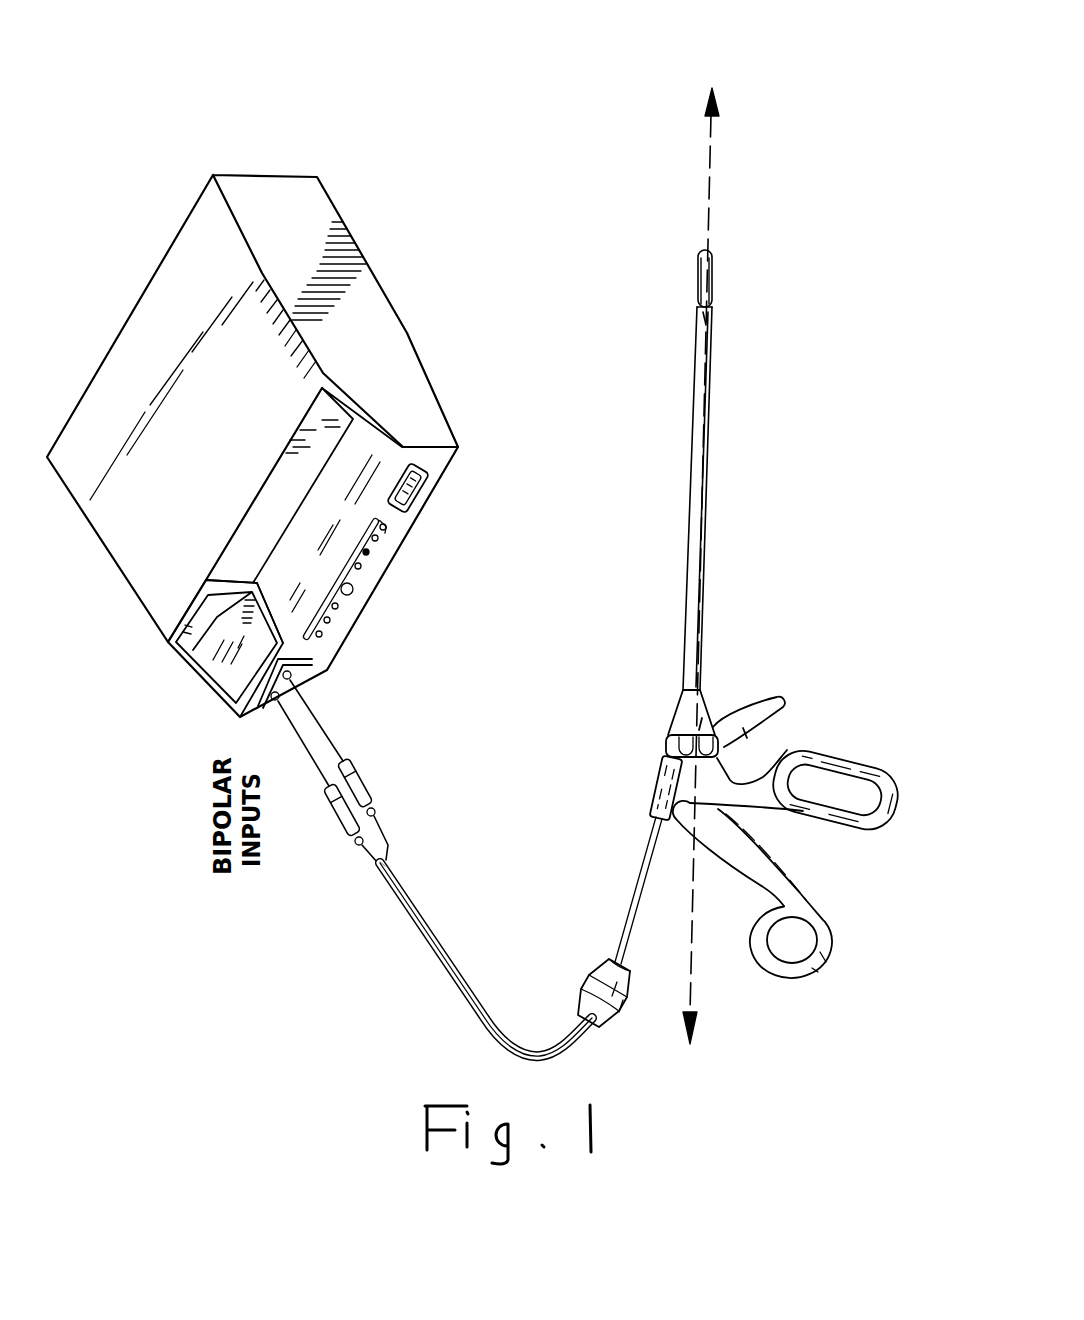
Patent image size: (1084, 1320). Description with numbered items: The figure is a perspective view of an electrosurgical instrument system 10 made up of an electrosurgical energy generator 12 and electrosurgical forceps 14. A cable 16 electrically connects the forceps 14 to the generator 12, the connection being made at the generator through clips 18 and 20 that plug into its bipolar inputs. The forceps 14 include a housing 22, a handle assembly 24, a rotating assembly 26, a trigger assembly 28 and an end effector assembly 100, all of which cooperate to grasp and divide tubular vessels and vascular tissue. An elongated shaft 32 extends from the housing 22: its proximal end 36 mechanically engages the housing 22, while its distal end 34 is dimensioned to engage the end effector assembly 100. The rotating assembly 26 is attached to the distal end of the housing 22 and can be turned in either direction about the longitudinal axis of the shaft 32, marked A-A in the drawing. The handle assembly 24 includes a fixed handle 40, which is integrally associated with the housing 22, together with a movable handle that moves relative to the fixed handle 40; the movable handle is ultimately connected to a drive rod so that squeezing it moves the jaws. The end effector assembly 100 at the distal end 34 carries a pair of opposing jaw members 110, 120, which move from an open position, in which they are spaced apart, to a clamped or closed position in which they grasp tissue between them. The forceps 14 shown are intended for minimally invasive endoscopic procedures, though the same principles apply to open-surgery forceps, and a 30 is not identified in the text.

The electrosurgical instrument system 10 is at (285, 858).
The electrosurgical energy generator 12 is at (205, 412).
The electrosurgical forceps 14 is at (760, 568).
The cable 16 is at (453, 957).
The clip 18 is at (260, 712).
The clip 20 is at (300, 674).
The housing 22 is at (650, 768).
The handle assembly 24 is at (826, 752).
The rotating assembly 26 is at (668, 742).
The trigger assembly 28 is at (730, 729).
The movable handle 30 is at (822, 966).
The shaft 32 is at (684, 516).
The distal end 34 is at (698, 322).
The proximal end 36 is at (683, 681).
The fixed handle 40 is at (893, 775).
The end effector assembly 100 is at (696, 226).
The jaw member 110 is at (697, 258).
The jaw member 120 is at (714, 262).